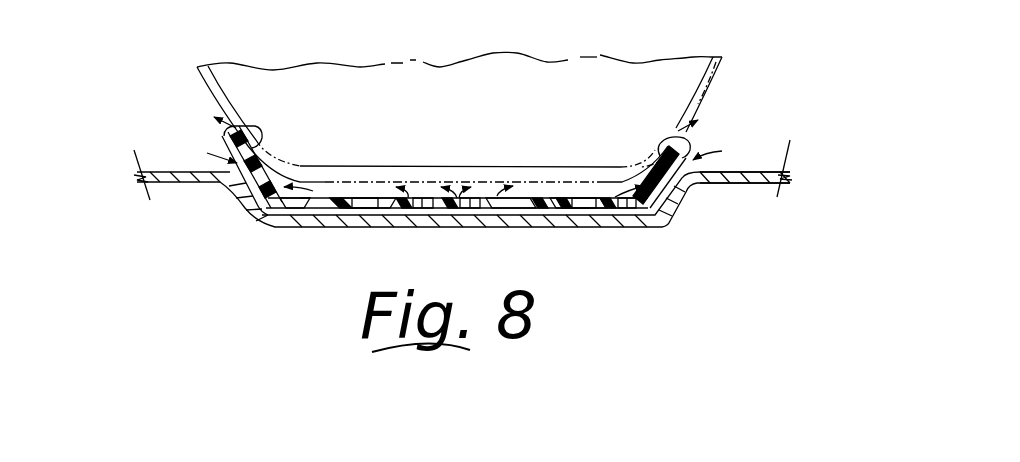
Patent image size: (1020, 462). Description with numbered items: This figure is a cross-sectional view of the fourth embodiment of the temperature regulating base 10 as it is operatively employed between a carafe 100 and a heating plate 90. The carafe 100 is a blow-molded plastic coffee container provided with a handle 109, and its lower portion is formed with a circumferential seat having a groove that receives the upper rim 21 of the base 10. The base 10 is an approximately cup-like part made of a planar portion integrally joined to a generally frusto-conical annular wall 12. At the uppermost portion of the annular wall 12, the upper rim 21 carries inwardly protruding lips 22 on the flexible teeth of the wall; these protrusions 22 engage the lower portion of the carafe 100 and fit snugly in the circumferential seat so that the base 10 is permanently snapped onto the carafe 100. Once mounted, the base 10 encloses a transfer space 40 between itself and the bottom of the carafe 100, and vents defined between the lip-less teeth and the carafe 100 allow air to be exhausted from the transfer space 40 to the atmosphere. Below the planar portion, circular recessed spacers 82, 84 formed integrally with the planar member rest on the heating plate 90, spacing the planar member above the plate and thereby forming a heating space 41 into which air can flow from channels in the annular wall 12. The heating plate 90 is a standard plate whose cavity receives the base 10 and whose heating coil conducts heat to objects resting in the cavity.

The temperature regulating base 10 is at (184, 119).
The annular wall 12 is at (256, 202).
The upper rim 21 is at (228, 137).
The protrusion 22 is at (252, 139).
The transfer space 40 is at (367, 192).
The heating space 41 is at (414, 209).
The recessed spacer 82 is at (568, 210).
The recessed spacer 84 is at (350, 209).
The heating plate 90 is at (744, 162).
The carafe 100 is at (705, 83).
The handle 109 is at (836, 75).